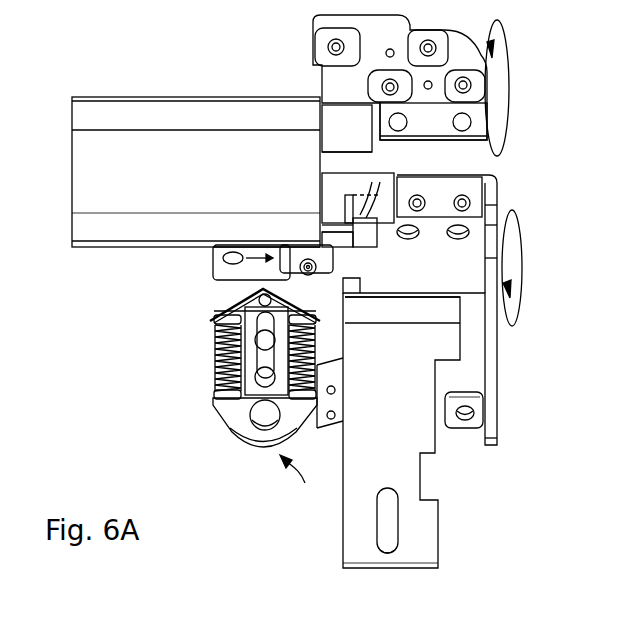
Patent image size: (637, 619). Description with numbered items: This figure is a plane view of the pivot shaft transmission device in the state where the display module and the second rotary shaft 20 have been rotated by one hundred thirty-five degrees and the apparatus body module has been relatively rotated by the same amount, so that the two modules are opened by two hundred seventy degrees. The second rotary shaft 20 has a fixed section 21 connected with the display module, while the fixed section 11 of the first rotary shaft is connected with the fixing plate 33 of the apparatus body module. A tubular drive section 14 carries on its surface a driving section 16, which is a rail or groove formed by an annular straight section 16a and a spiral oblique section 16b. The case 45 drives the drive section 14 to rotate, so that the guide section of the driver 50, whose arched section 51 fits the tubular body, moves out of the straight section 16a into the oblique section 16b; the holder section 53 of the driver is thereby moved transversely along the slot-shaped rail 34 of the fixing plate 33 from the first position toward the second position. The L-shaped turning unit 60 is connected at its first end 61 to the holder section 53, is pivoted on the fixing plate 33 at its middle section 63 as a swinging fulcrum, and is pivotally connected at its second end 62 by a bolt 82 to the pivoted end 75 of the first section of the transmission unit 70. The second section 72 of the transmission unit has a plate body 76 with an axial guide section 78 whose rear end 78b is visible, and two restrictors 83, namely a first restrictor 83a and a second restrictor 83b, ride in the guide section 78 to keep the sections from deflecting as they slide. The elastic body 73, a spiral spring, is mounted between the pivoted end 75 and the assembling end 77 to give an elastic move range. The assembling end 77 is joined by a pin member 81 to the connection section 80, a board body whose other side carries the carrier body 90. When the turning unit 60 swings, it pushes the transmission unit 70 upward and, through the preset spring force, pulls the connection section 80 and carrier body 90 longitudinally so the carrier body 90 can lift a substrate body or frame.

The fixed section 11 is at (451, 297).
The drive section 14 is at (337, 168).
The driving section 16 is at (357, 163).
The straight section 16a is at (337, 183).
The oblique section 16b is at (433, 135).
The second rotary shaft 20 is at (337, 107).
The fixed section 21 is at (482, 122).
The fixing plate 33 is at (478, 243).
The rail 34 is at (373, 237).
The case 45 is at (122, 112).
The driver 50 is at (433, 248).
The arched section 51 is at (433, 248).
The holder section 53 is at (290, 247).
The turning unit 60 is at (390, 335).
The first end 61 is at (248, 247).
The second end 62 is at (213, 265).
The middle section 63 is at (320, 320).
The transmission unit 70 is at (239, 409).
The second section 72 is at (296, 483).
The elastic body 73 is at (215, 400).
The pivoted end 75 is at (222, 293).
The plate body 76 is at (215, 328).
The assembling end 77 is at (218, 434).
The guide section 78 is at (245, 362).
The rear end 78b is at (217, 310).
The connection section 80 is at (342, 412).
The pin member 81 is at (262, 423).
The bolt 82 is at (320, 313).
The restrictor 83 is at (199, 362).
The first restrictor 83a is at (217, 385).
The second restrictor 83b is at (217, 343).
The carrier body 90 is at (427, 379).